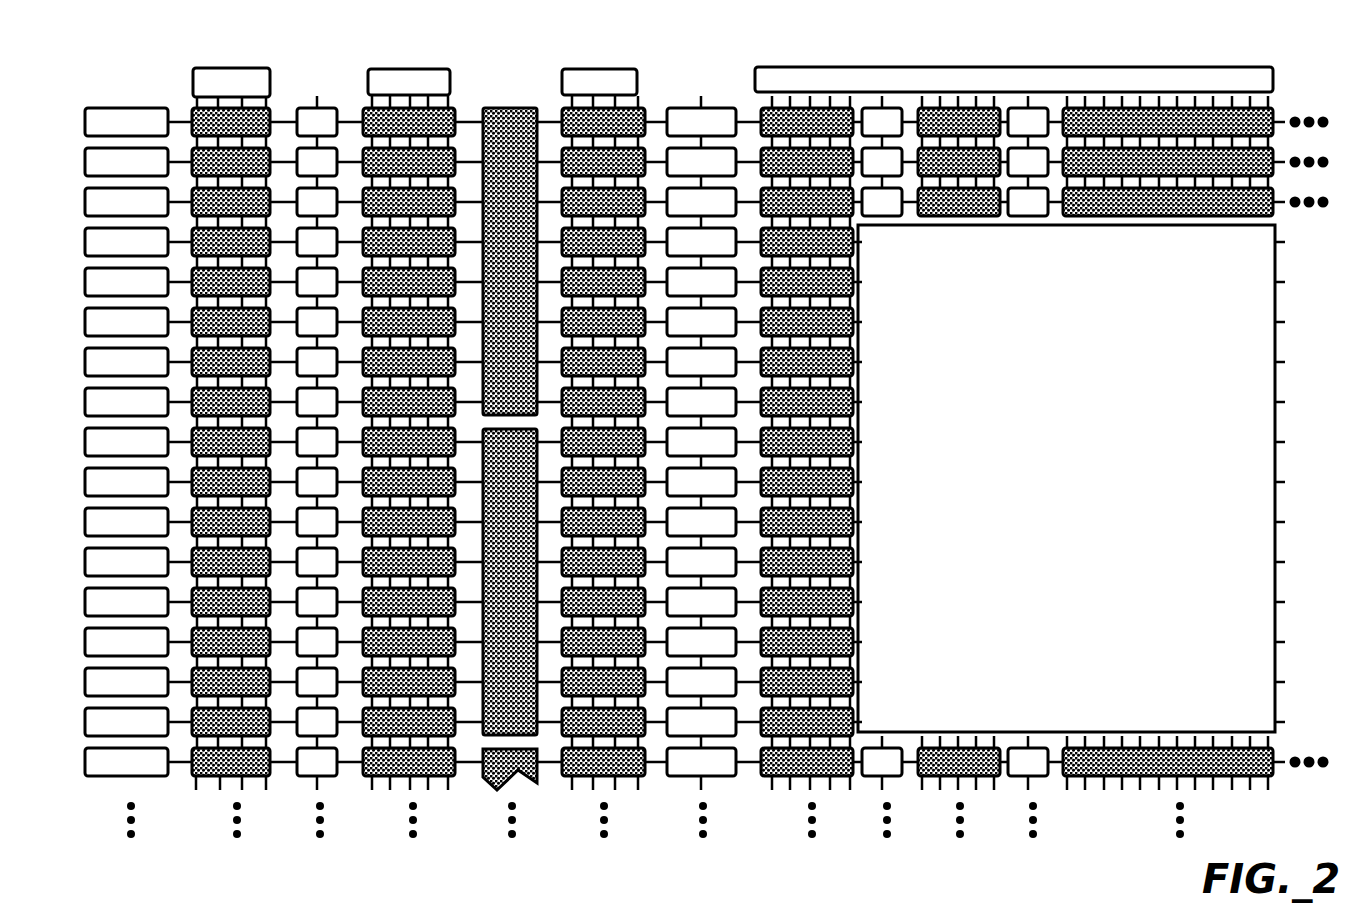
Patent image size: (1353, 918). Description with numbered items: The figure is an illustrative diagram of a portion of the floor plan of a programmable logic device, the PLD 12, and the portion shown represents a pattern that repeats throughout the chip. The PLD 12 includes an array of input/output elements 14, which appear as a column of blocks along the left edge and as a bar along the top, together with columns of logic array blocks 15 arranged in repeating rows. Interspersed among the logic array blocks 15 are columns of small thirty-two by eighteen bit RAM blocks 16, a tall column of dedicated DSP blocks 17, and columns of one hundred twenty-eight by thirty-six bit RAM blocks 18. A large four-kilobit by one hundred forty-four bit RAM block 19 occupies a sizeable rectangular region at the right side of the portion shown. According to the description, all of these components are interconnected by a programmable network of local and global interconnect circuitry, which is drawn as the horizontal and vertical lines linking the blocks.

The PLD 12 is at (690, 467).
The input/output elements 14 is at (102, 107).
The logic array blocks 15 is at (748, 463).
The 32×18 bit RAM blocks 16 is at (318, 94).
The dedicated DSP blocks 17 is at (512, 107).
The 128×36 bit RAM blocks 18 is at (699, 92).
The 4K×144 bit RAM block 19 is at (1071, 478).